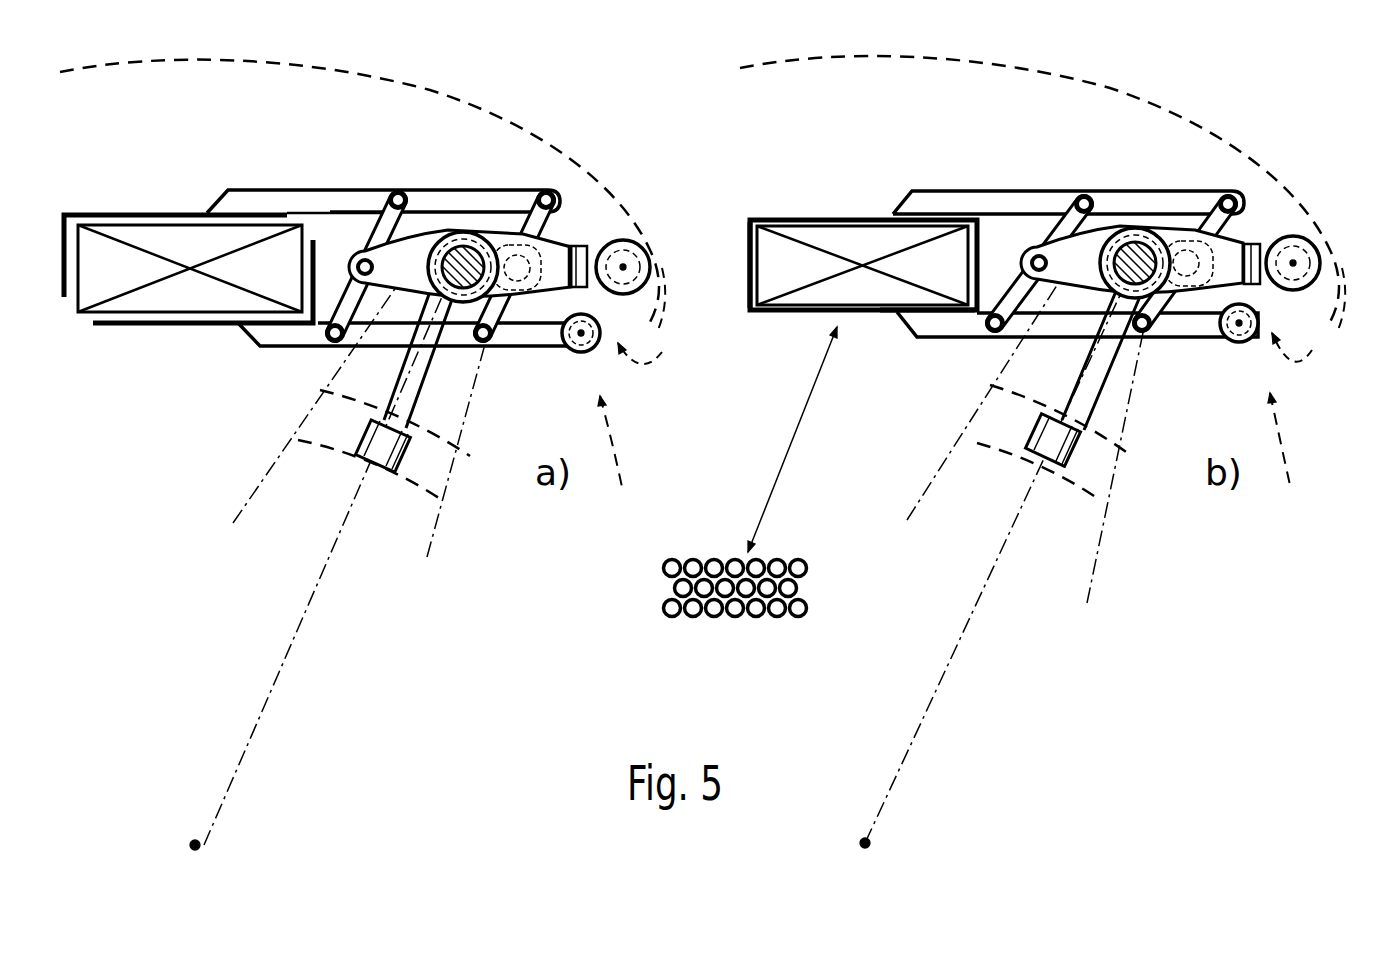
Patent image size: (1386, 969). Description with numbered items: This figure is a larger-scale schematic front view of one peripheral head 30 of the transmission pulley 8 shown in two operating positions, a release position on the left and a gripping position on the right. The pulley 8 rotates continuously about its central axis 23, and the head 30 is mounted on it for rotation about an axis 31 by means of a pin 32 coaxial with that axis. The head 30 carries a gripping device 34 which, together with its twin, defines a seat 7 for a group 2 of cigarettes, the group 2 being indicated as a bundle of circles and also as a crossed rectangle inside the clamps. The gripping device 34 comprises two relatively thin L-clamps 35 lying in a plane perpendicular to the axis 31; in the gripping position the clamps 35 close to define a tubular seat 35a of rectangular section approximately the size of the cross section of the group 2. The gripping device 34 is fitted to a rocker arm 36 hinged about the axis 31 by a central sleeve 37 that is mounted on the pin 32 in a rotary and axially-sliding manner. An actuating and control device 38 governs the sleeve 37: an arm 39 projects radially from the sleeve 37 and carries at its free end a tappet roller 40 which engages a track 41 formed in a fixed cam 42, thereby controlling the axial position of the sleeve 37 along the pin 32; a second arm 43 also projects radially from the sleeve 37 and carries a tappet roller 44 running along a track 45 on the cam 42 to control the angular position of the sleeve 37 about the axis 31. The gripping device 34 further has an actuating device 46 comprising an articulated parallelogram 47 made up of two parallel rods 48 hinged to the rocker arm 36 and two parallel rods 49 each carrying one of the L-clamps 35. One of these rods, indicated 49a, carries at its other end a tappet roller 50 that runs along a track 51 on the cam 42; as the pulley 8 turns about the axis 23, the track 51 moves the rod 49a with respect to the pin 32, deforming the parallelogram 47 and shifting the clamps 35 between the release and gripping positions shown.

The group of cigarettes 2 is at (98, 292).
The seat 7 is at (905, 293).
The transmission pulley 8 is at (282, 68).
The central axis 23 is at (191, 840).
The peripheral head 30 is at (283, 172).
The axis 31 is at (475, 330).
The pin 32 is at (443, 233).
The gripping device 34 is at (163, 194).
The L-clamp 35 is at (118, 213).
The tubular seat 35a is at (758, 264).
The rocker arm 36 is at (372, 204).
The central sleeve 37 is at (468, 228).
The actuating and control device 38 is at (656, 240).
The arm 39 is at (403, 393).
The tappet roller 40 is at (366, 472).
The track 41 is at (410, 488).
The fixed cam 42 is at (962, 461).
The arm 43 is at (558, 250).
The tappet roller 44 is at (631, 242).
The track 45 is at (1012, 307).
The actuating device 46 is at (566, 355).
The articulated parallelogram 47 is at (557, 178).
The rod 48 is at (325, 338).
The rod 49 is at (504, 205).
The rod 49a is at (523, 340).
The tappet roller 50 is at (582, 353).
The track 51 is at (973, 368).